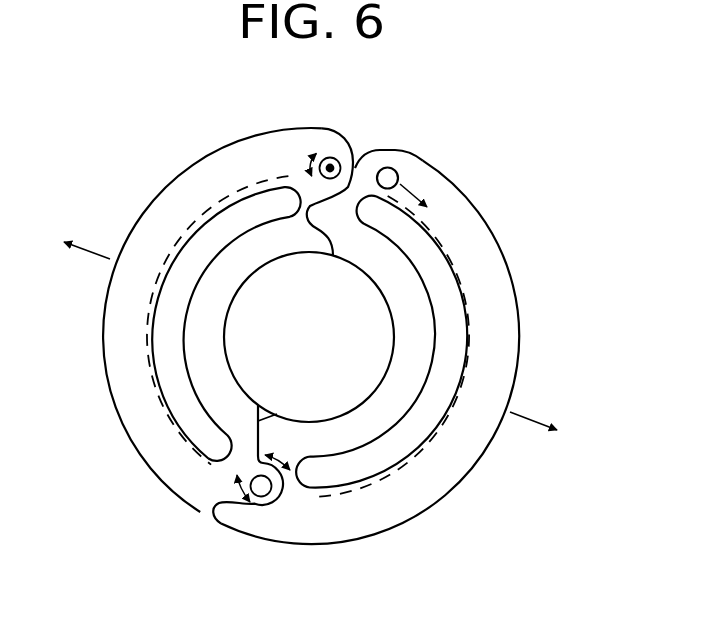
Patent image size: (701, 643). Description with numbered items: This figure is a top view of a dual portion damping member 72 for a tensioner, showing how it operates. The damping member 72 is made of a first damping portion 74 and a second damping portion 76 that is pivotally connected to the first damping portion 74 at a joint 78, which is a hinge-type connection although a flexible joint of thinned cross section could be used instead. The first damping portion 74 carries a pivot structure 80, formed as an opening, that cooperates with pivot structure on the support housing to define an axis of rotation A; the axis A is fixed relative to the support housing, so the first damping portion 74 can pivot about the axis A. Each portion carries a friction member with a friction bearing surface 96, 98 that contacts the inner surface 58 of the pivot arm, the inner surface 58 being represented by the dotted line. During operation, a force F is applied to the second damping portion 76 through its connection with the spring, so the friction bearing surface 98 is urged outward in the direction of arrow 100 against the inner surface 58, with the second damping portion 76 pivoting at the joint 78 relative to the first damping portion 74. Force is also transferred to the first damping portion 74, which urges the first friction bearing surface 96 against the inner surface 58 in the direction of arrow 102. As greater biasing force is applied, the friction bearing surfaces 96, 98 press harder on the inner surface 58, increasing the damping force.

The damping member 72 is at (541, 206).
The first damping portion 74 is at (190, 198).
The second damping portion 76 is at (495, 282).
The joint 78 is at (262, 488).
The pivot structure 80 is at (341, 162).
The friction bearing surface 96 is at (156, 322).
The friction bearing surface 98 is at (467, 360).
The arrow 100 is at (528, 416).
The arrow 102 is at (93, 252).
The inner surface 58 is at (363, 483).
The axis of rotation A is at (330, 167).
The force F is at (413, 190).